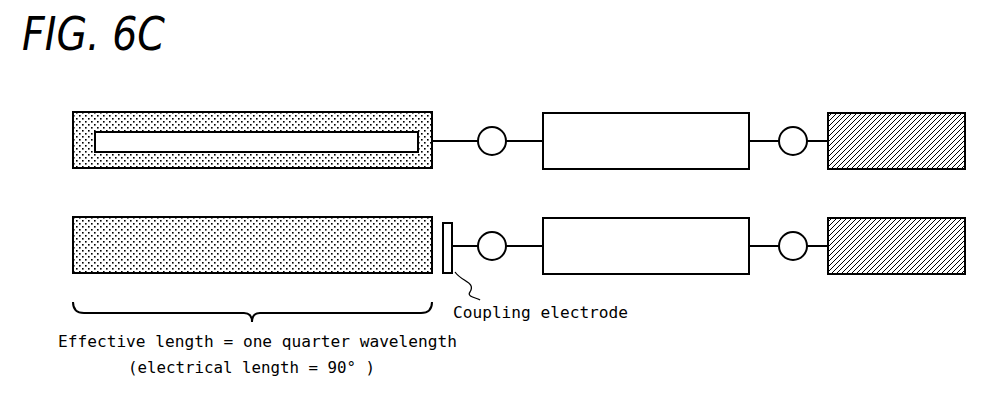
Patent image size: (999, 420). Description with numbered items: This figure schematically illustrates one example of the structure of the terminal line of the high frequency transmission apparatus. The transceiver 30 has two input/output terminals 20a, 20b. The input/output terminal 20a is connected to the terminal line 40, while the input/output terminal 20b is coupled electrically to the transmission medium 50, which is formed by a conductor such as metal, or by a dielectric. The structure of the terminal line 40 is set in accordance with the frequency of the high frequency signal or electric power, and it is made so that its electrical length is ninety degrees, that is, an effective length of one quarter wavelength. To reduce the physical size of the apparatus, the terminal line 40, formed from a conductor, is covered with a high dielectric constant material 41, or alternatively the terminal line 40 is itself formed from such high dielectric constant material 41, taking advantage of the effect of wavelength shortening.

The input/output terminal 20a is at (490, 126).
The input/output terminal 20b is at (792, 126).
The transceiver 30 is at (643, 113).
The terminal line 40 is at (250, 143).
The high dielectric constant material 41 is at (146, 118).
The transmission medium 50 is at (893, 113).